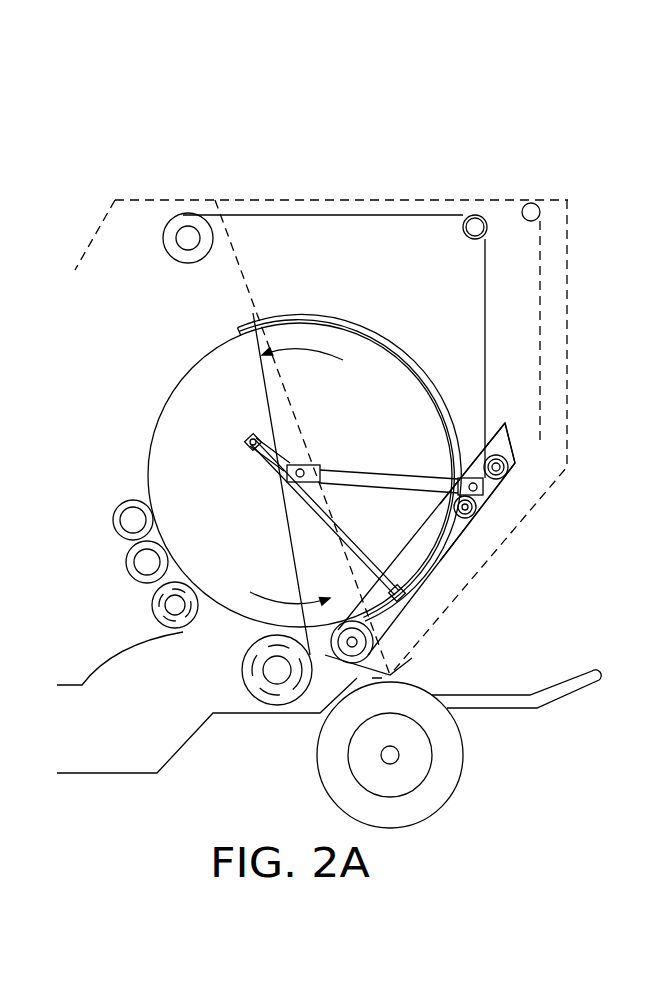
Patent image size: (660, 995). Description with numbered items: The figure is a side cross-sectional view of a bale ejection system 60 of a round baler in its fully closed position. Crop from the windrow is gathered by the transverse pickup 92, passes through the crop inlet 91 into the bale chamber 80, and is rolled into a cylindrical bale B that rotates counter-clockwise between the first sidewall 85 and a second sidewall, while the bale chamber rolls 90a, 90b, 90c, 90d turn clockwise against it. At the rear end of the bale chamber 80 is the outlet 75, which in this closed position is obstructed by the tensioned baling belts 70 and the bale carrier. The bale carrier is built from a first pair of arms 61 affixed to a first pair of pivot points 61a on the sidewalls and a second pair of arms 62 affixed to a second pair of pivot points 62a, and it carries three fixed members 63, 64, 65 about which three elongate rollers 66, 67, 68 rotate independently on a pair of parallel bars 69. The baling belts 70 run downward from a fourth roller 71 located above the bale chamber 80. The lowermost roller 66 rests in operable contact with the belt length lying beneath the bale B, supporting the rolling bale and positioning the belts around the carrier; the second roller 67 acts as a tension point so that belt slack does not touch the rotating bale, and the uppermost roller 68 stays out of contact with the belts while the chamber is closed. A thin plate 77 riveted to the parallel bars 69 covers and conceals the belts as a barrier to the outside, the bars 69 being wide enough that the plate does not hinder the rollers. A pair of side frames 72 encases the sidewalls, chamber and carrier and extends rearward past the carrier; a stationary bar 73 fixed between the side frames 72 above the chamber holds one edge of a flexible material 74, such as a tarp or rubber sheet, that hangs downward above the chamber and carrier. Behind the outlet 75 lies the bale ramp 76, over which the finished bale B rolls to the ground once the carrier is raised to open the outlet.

The bale ejection system 60 is at (313, 178).
The first pair of arms 61 is at (347, 478).
The first pair of pivot points 61a is at (330, 472).
The second pair of arms 62 is at (457, 535).
The second pair of pivot points 62a is at (247, 440).
The fixed member 63 is at (357, 643).
The fixed member 64 is at (478, 512).
The fixed member 65 is at (513, 463).
The lowermost roller 66 is at (460, 730).
The second roller 67 is at (473, 513).
The uppermost roller 68 is at (510, 477).
The parallel bars 69 is at (510, 433).
The baling belts 70 is at (488, 270).
The fourth roller 71 is at (482, 220).
The side frames 72 is at (176, 200).
The stationary bar 73 is at (540, 212).
The flexible material 74 is at (543, 280).
The outlet 75 is at (464, 453).
The bale ramp 76 is at (568, 697).
The thin plate 77 is at (402, 596).
The bale chamber 80 is at (190, 403).
The first sidewall 85 is at (256, 400).
The bale B is at (230, 550).
The bale chamber roll 90a is at (253, 697).
The bale chamber roll 90b is at (150, 612).
The bale chamber roll 90c is at (125, 565).
The bale chamber roll 90d is at (118, 503).
The crop inlet 91 is at (249, 670).
The transverse pickup 92 is at (110, 747).